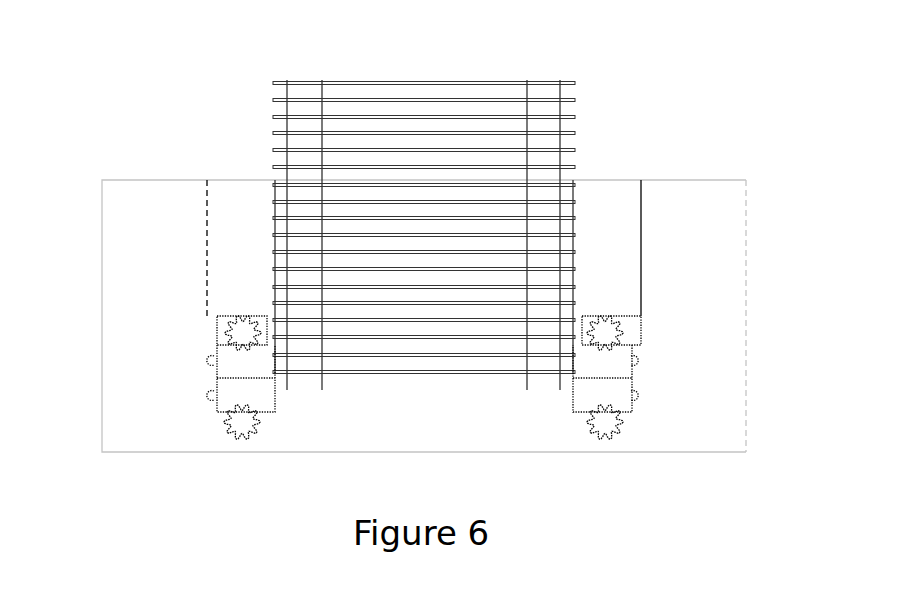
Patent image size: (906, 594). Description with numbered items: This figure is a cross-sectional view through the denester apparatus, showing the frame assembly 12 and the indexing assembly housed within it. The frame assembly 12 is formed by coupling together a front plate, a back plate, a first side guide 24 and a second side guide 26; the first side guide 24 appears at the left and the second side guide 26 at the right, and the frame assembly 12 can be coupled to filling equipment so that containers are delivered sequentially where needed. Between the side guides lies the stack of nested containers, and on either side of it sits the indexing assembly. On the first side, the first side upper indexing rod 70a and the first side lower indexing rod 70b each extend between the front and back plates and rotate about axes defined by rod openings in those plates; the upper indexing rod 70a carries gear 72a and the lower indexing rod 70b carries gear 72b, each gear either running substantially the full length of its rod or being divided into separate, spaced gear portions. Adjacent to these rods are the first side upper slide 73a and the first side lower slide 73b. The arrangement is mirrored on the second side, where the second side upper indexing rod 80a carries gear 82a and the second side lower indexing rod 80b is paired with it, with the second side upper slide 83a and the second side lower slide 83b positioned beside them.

The frame assembly 12 is at (752, 209).
The first side guide 24 is at (203, 198).
The second side guide 26 is at (648, 200).
The first side upper indexing rod 70a is at (216, 333).
The first side lower indexing rod 70b is at (241, 448).
The gear 72a is at (218, 320).
The gear 72b is at (228, 442).
The first side upper slide 73a is at (202, 363).
The first side lower slide 73b is at (202, 398).
The second side upper indexing rod 80a is at (626, 331).
The second side lower indexing rod 80b is at (621, 445).
The gear 82a is at (620, 312).
The second side upper slide 83a is at (648, 364).
The second side lower slide 83b is at (650, 397).